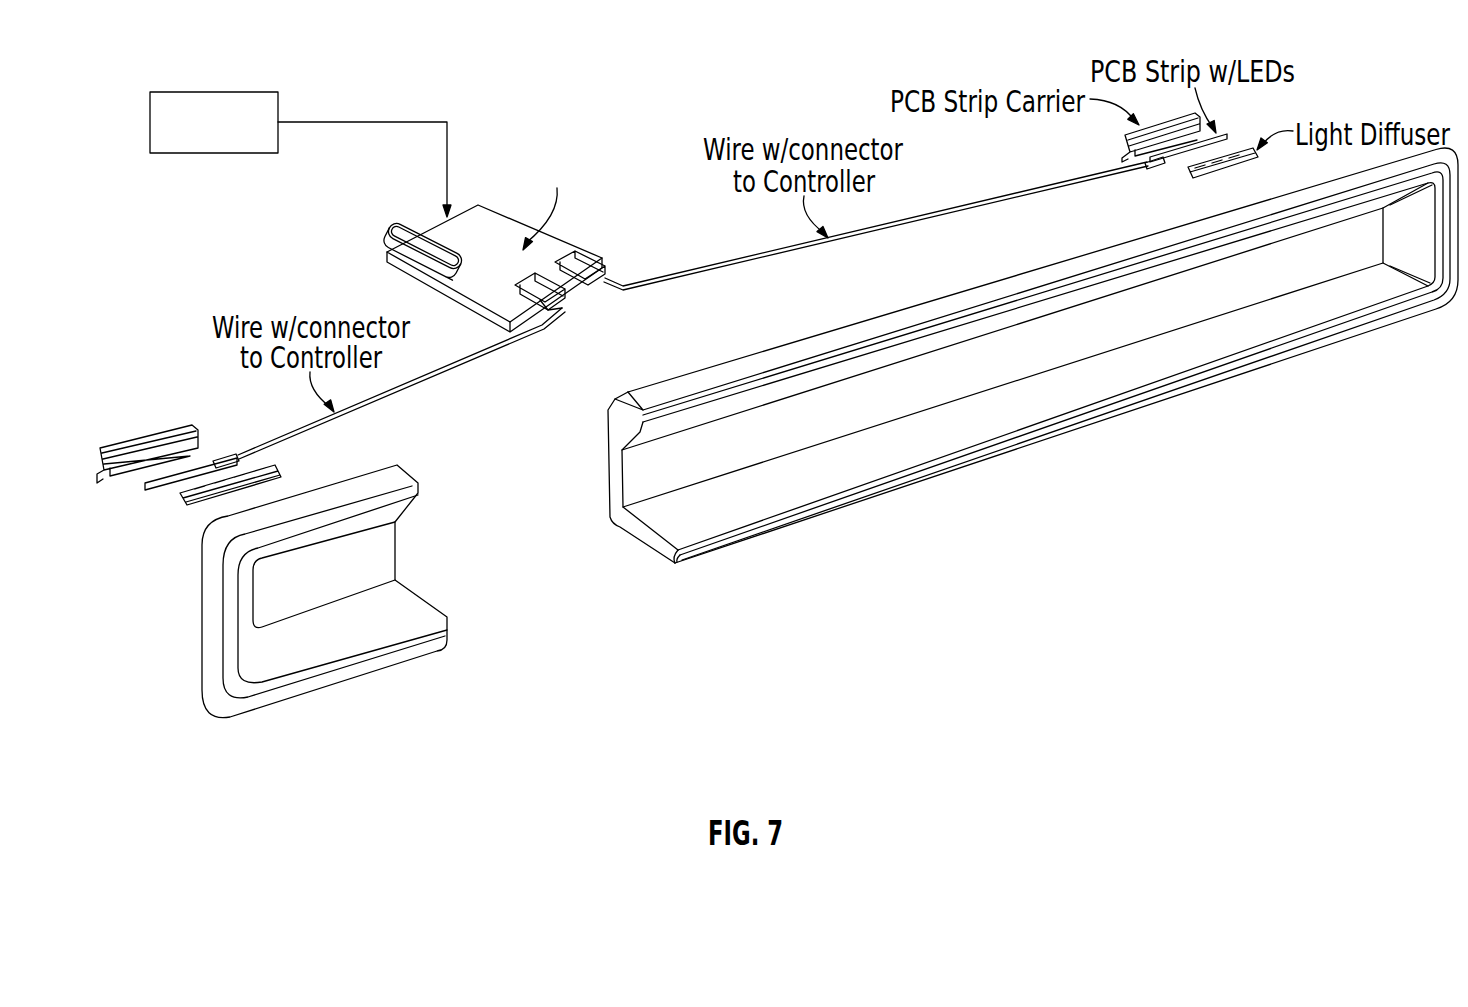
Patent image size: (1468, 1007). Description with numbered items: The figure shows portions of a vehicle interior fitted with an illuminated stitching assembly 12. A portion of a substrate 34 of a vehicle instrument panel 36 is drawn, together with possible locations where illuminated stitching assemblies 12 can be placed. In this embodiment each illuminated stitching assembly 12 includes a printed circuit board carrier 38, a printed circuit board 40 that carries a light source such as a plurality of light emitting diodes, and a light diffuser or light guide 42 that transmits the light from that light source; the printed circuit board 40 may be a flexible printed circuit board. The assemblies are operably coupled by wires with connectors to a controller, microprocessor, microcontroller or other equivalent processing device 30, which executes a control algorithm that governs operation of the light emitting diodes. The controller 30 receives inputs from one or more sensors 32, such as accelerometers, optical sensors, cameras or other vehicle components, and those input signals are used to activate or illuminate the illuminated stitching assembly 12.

The illuminated stitching assembly 12 is at (724, 323).
The controller 30 is at (562, 238).
The sensors 32 is at (229, 91).
The substrate 34 is at (1034, 403).
The vehicle instrument panel 36 is at (1322, 372).
The printed circuit board carrier 38 is at (120, 470).
The printed circuit board 40 is at (216, 458).
The light diffuser 42 is at (188, 507).